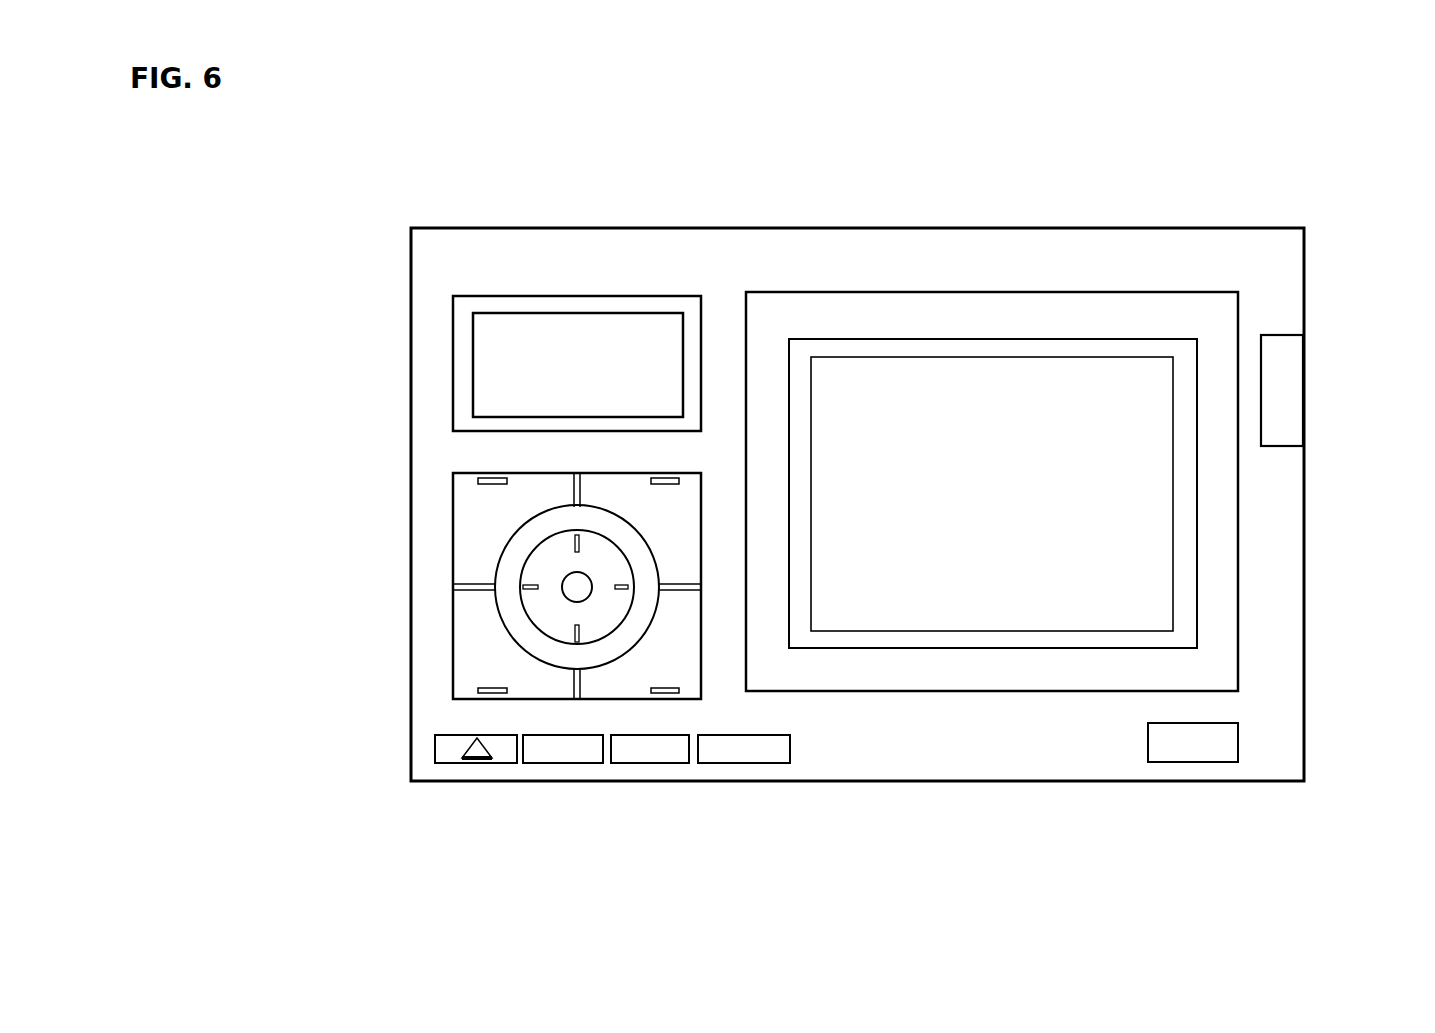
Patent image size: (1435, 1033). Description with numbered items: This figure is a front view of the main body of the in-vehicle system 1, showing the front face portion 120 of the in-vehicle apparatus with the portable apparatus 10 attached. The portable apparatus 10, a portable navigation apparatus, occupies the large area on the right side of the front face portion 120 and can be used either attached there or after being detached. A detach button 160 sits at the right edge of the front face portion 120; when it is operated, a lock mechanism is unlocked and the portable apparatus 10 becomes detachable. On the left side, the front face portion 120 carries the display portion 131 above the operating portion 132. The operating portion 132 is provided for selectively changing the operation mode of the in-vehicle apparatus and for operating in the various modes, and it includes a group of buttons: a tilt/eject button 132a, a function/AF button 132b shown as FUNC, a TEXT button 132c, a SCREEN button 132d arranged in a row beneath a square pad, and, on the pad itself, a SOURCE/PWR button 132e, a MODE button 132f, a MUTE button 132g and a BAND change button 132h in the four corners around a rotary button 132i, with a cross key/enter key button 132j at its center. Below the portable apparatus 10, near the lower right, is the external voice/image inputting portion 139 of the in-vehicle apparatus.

The in-vehicle system 1 is at (814, 91).
The portable apparatus 10 is at (1043, 307).
The front face portion 120 is at (590, 258).
The display portion 131 is at (495, 372).
The operating portion 132 is at (263, 417).
The tilt/eject button 132a is at (476, 765).
The function/AF button 132b is at (556, 765).
The TEXT button 132c is at (650, 765).
The SCREEN button 132d is at (735, 765).
The SOURCE/PWR button 132e is at (468, 542).
The MODE button 132f is at (607, 489).
The MUTE button 132g is at (683, 632).
The BAND change button 132h is at (475, 635).
The rotary button 132i is at (497, 577).
The cross key/enter key button 132j is at (538, 605).
The external voice/image inputting portion 139 is at (1195, 750).
The detach button 160 is at (1287, 382).